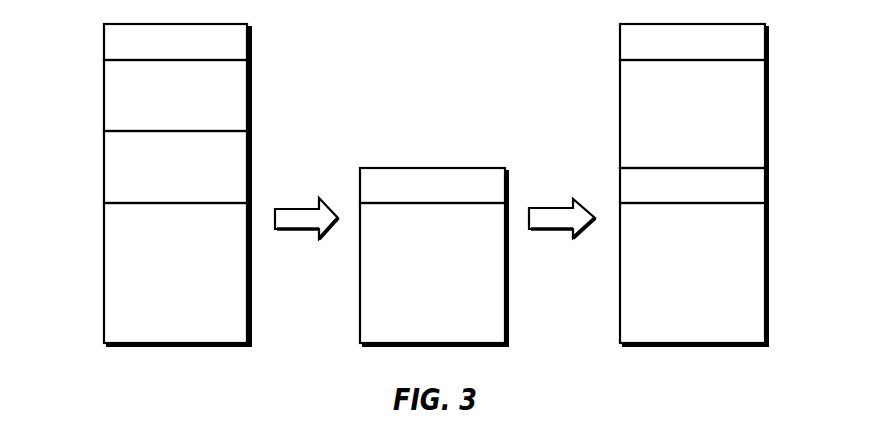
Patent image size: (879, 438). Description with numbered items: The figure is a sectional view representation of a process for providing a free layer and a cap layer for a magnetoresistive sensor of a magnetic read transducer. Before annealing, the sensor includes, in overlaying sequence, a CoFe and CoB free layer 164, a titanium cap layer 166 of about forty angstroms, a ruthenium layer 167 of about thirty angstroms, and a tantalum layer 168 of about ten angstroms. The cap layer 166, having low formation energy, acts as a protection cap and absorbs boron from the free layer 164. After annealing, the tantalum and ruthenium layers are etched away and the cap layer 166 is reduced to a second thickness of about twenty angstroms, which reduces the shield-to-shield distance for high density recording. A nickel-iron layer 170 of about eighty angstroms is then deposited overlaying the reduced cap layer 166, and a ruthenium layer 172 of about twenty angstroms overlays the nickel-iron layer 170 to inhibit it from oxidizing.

The free layer 164 is at (104, 250).
The cap layer 166 is at (104, 168).
The ruthenium layer 167 is at (104, 91).
The tantalum layer 168 is at (104, 42).
The nickel-iron layer 170 is at (770, 90).
The ruthenium layer 172 is at (770, 43).